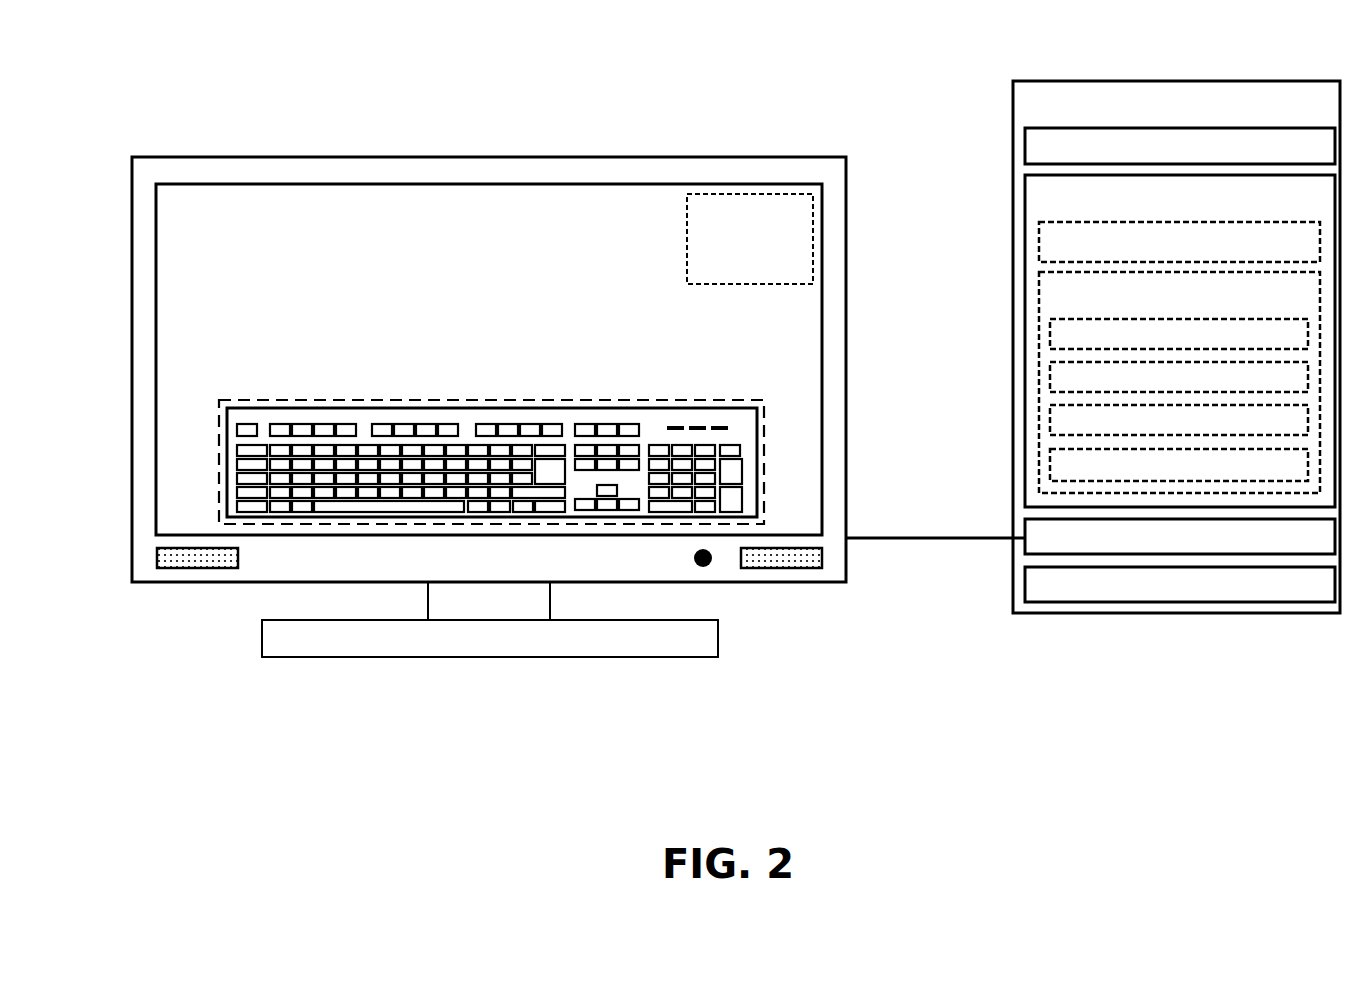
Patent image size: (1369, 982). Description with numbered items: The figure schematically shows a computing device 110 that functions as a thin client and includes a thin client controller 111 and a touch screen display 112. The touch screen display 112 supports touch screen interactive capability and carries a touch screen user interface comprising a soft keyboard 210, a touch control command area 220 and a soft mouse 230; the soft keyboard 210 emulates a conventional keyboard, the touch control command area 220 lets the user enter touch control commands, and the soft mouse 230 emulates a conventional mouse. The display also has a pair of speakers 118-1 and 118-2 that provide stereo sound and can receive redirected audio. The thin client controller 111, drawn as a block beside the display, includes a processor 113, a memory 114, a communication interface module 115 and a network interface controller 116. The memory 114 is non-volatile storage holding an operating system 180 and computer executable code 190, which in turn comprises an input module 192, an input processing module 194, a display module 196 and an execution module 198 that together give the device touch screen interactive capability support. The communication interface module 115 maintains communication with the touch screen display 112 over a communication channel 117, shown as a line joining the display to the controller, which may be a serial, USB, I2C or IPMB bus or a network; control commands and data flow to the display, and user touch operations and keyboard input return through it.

The computing device 110 is at (184, 57).
The touch screen display 112 is at (468, 183).
The soft mouse 230 is at (367, 248).
The touch control command area 220 is at (752, 194).
The soft keyboard 210 is at (612, 401).
The speaker 118-1 is at (208, 566).
The speaker 118-2 is at (761, 566).
The communication channel 117 is at (970, 538).
The thin client controller 111 is at (1013, 81).
The processor 113 is at (1025, 128).
The memory 114 is at (1025, 175).
The operating system 180 is at (1039, 241).
The computer executable code 190 is at (1039, 297).
The input module 192 is at (1050, 334).
The input processing module 194 is at (1050, 377).
The display module 196 is at (1050, 420).
The execution module 198 is at (1050, 465).
The communication interface module 115 is at (1025, 554).
The network interface controller 116 is at (1013, 613).